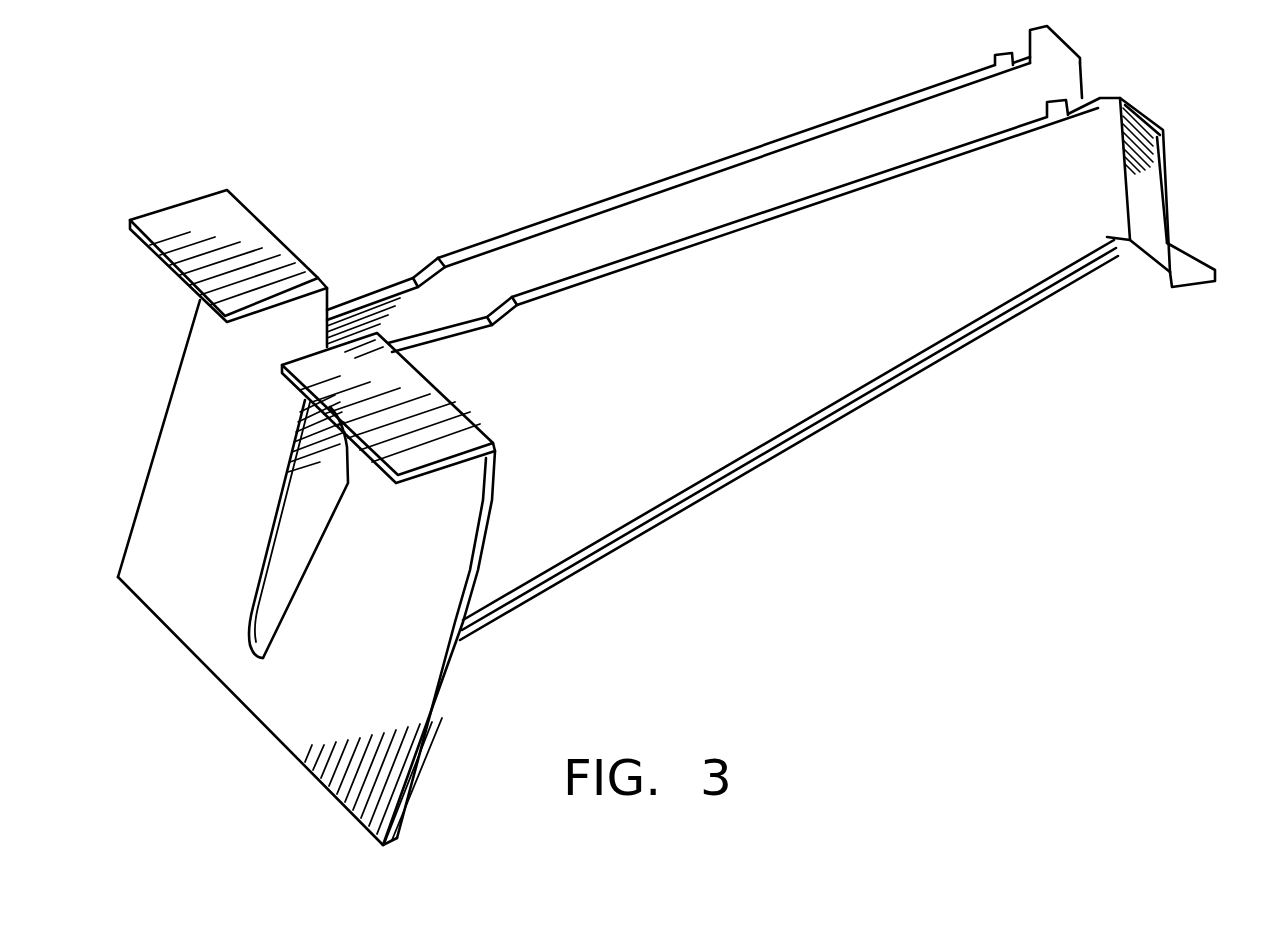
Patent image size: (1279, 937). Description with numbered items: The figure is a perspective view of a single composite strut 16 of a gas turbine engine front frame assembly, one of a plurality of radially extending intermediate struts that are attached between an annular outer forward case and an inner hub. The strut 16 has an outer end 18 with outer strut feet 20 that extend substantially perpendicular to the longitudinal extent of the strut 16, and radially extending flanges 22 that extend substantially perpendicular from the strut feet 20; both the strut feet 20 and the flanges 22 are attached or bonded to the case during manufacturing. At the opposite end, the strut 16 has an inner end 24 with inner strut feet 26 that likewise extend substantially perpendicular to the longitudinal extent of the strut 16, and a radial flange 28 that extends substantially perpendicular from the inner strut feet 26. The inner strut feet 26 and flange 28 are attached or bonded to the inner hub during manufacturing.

The strut member 16 is at (778, 453).
The outer end 18 is at (218, 657).
The outer strut feet 20 is at (241, 455).
The radially extending flanges 22 is at (430, 413).
The inner end 24 is at (1102, 263).
The inner strut feet 26 is at (1158, 108).
The radial flange 28 is at (1198, 277).